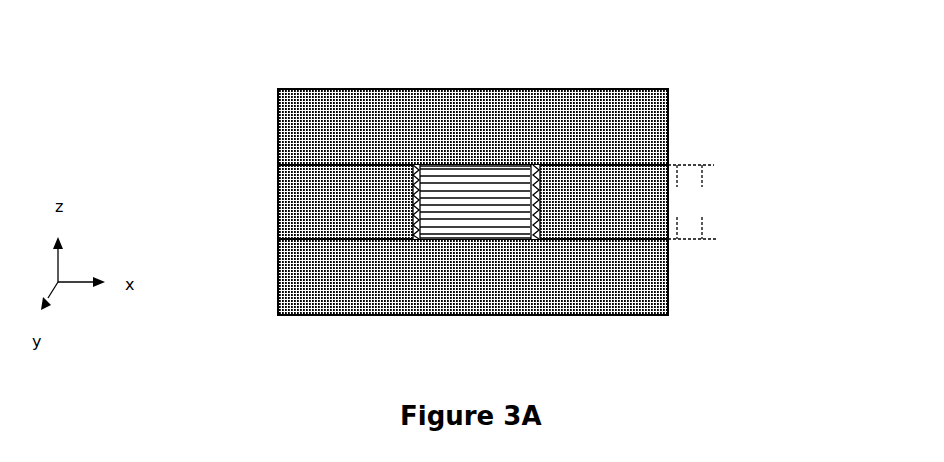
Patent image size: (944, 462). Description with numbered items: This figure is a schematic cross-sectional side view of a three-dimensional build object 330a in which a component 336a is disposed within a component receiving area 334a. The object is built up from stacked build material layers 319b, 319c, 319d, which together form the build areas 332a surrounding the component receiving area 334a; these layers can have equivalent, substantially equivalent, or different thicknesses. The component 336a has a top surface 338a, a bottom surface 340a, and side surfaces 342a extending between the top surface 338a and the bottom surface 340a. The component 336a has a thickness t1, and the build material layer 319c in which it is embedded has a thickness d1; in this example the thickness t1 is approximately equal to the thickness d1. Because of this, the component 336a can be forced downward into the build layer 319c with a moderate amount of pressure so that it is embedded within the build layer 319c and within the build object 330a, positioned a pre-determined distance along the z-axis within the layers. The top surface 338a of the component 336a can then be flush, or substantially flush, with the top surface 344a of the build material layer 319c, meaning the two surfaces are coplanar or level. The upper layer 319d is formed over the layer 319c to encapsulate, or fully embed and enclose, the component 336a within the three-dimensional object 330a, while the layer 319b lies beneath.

The three-dimensional build object 330a is at (145, 84).
The build area 332a is at (292, 172).
The component receiving area 334a is at (541, 170).
The component 336a is at (462, 183).
The top surface 338a is at (500, 170).
The bottom surface 340a is at (445, 239).
The side surfaces 342a is at (531, 168).
The top surface of build material layer 344a is at (347, 165).
The build material layer 319b is at (668, 274).
The build material layer 319c is at (668, 222).
The build material layer 319d is at (668, 114).
The thickness of build material layer d1 is at (692, 202).
The thickness of component t1 is at (705, 202).